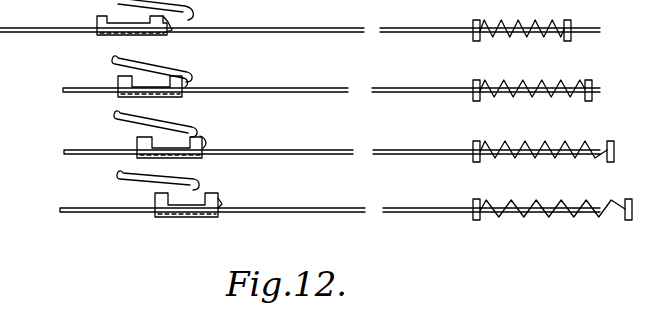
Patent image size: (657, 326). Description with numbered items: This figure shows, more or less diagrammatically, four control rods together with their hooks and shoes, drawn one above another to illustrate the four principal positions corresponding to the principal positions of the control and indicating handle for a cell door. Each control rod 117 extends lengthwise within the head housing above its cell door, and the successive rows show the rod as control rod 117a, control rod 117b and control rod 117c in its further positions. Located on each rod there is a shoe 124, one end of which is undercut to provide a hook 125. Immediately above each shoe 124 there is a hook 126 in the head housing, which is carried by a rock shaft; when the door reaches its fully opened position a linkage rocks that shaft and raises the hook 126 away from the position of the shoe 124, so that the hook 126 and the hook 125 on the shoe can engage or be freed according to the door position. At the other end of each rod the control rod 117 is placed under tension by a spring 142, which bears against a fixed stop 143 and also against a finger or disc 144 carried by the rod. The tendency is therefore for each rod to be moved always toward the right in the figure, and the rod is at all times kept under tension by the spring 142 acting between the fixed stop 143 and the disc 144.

The control rod 117 is at (364, 33).
The control rod 117a is at (348, 93).
The control rod 117b is at (353, 155).
The control rod 117c is at (365, 213).
The shoe 124 is at (97, 20).
The hook 125 is at (172, 34).
The hook 126 is at (135, 57).
The spring 142 is at (540, 0).
The fixed stop 143 is at (475, 19).
The finger or disc 144 is at (571, 20).